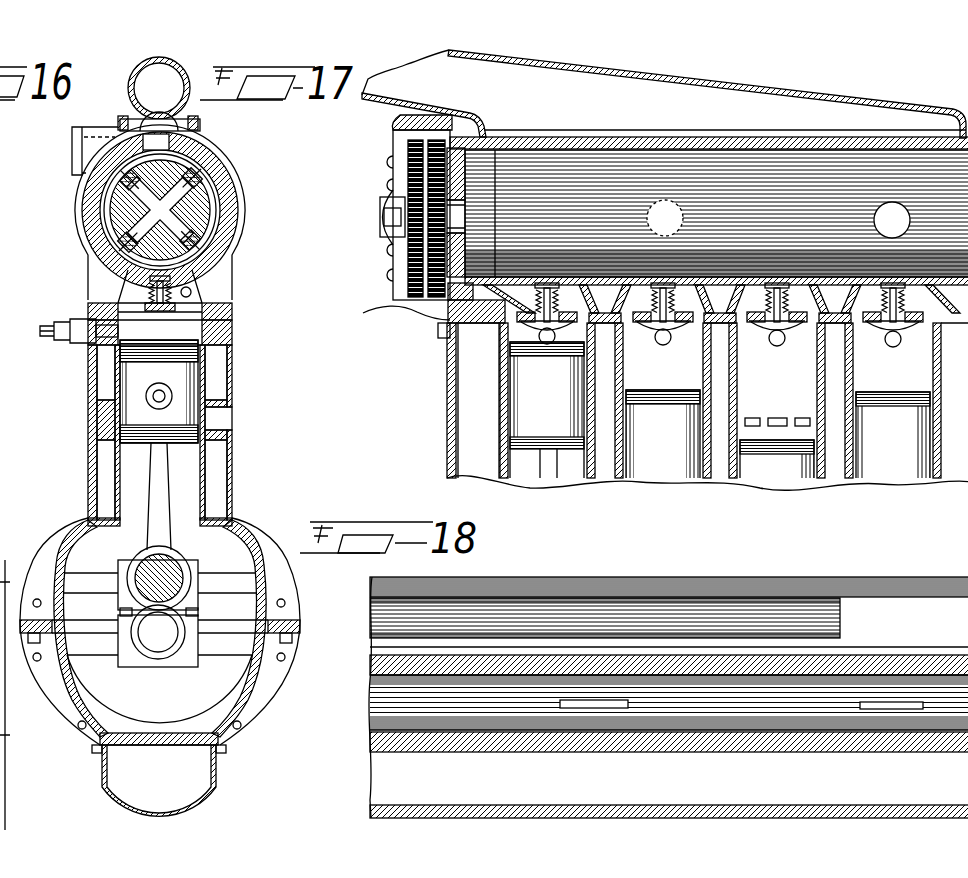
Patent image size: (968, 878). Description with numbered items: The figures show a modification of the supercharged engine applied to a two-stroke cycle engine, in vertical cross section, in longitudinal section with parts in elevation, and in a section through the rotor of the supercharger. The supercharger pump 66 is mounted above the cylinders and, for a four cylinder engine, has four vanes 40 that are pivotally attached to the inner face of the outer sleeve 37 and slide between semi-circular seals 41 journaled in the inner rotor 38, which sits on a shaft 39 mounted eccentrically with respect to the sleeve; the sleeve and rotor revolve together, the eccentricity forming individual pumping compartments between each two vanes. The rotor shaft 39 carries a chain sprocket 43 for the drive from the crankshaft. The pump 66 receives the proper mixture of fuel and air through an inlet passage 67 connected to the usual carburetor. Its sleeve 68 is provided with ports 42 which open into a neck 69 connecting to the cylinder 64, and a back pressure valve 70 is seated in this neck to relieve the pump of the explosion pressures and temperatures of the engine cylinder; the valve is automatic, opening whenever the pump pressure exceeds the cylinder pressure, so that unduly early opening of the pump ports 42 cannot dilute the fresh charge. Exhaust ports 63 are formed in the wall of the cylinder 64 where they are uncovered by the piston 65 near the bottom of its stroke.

In FIG. 18, the outer sleeve 37 is at (445, 808).
In FIG. 18, the inner rotor 38 is at (565, 748).
In FIG. 18, the rotor shaft 39 is at (780, 666).
In FIG. 16, the vanes 40 is at (200, 200).
In FIG. 18, the semi-circular seals 41 is at (830, 624).
In FIG. 16, the ports 42 is at (168, 150).
In FIG. 17, the ports 42 is at (888, 212).
In FIG. 17, the chain sprocket 43 is at (412, 298).
In FIG. 16, the exhaust ports 63 is at (228, 419).
In FIG. 17, the exhaust ports 63 is at (802, 418).
In FIG. 16, the cylinder 64 is at (203, 314).
In FIG. 16, the piston 65 is at (186, 378).
In FIG. 17, the piston 65 is at (768, 474).
In FIG. 16, the supercharger pump 66 is at (206, 203).
In FIG. 16, the inlet passage 67 is at (77, 151).
In FIG. 16, the sleeve 68 is at (213, 221).
In FIG. 17, the sleeve 68 is at (716, 213).
In FIG. 16, the neck 69 is at (192, 293).
In FIG. 17, the neck 69 is at (690, 297).
In FIG. 16, the back pressure valve 70 is at (148, 302).
In FIG. 17, the back pressure valve 70 is at (533, 323).